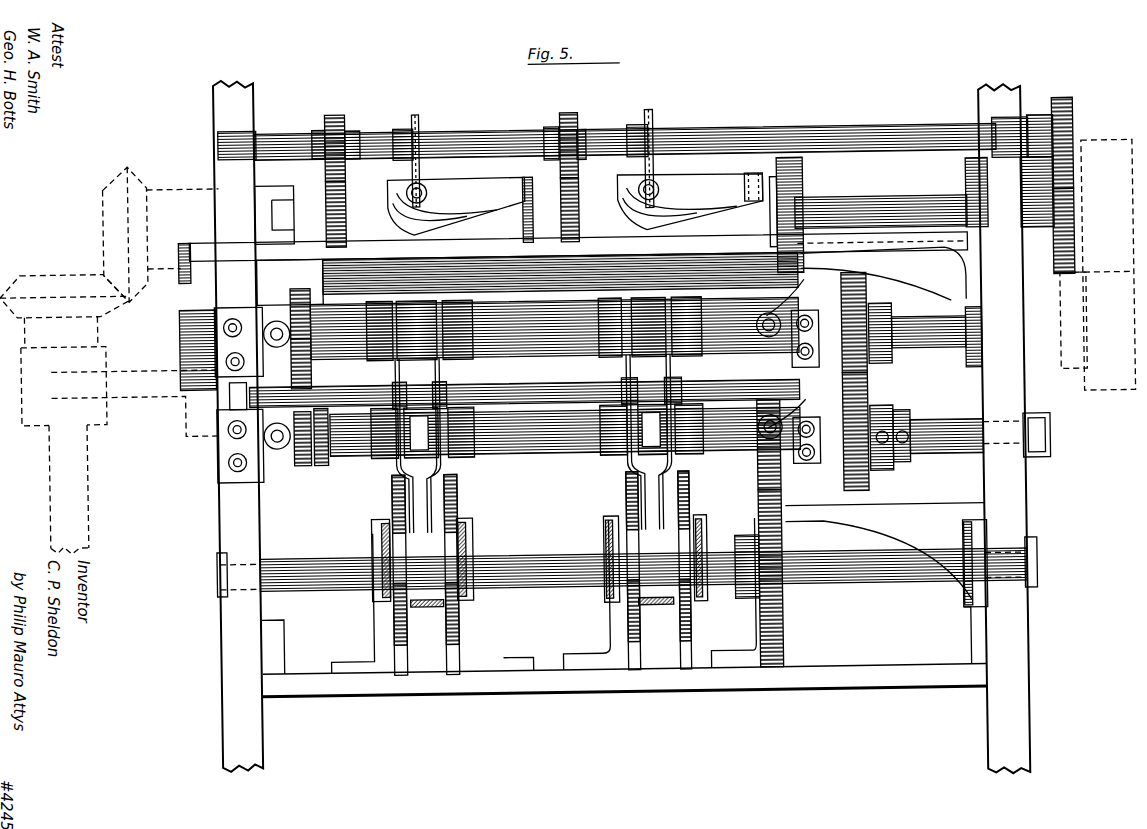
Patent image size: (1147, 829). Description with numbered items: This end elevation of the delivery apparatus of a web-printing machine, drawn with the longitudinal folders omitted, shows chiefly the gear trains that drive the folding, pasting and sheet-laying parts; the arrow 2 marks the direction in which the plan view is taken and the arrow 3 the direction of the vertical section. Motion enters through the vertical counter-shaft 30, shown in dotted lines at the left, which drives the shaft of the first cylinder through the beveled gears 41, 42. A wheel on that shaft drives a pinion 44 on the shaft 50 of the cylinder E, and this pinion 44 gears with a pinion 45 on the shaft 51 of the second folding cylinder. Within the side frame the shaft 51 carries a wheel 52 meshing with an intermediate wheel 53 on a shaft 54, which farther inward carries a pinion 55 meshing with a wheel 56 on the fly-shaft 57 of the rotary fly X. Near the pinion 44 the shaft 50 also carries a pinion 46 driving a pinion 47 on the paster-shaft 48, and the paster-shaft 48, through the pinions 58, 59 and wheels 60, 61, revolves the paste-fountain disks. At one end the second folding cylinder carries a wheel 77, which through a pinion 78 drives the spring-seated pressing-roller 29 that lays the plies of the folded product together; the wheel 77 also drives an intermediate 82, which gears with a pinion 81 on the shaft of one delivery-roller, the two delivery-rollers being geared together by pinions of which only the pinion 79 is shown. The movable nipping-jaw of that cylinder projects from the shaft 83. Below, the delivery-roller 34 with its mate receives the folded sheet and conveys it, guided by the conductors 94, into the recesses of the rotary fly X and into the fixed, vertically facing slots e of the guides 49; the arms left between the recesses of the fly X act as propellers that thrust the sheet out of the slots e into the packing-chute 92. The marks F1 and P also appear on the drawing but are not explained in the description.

The arrow 2 is at (483, 38).
The arrow 3 is at (123, 506).
The pressing-roller 29 is at (534, 329).
The vertical counter-shaft 30 is at (88, 468).
The delivery-roller 34 is at (565, 427).
The beveled gear 41 is at (50, 268).
The beveled gear 42 is at (116, 203).
The pinion 44 is at (1100, 148).
The pinion 45 is at (1112, 399).
The pinion 46 is at (1066, 280).
The pinion 47 is at (1065, 110).
The paster-shaft 48 is at (838, 141).
The guides 49 is at (370, 527).
The shaft 50 is at (905, 203).
The shaft 51 is at (918, 325).
The wheel 52 is at (867, 292).
The intermediate wheel 53 is at (870, 485).
The shaft 54 is at (936, 428).
The pinion 55 is at (756, 476).
The wheel 56 is at (757, 506).
The fly-shaft 57 is at (858, 582).
The pinion 58 is at (324, 127).
The pinion 59 is at (550, 128).
The wheel 60 is at (349, 212).
The wheel 61 is at (582, 210).
The wheel 77 is at (294, 290).
The pinion 78 is at (316, 290).
The pinion 79 is at (318, 462).
The pinion 81 is at (300, 462).
The intermediate 82 is at (300, 362).
The shaft 83 is at (790, 296).
The packing-chute 92 is at (425, 604).
The conductors 94 is at (627, 470).
The cylinder E is at (573, 269).
The roller shaft F1 is at (554, 321).
The pin lever P is at (423, 116).
The rotary fly X is at (391, 483).
The slots e is at (604, 512).